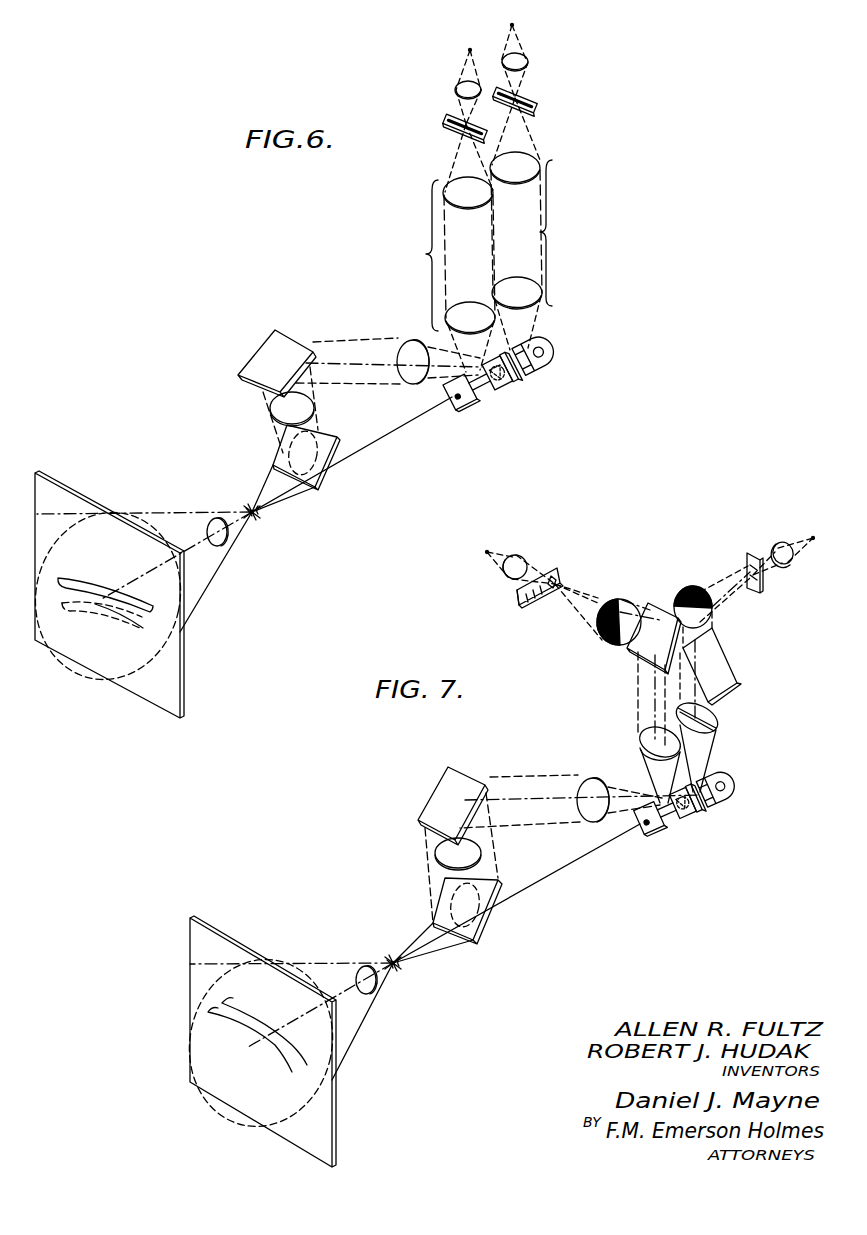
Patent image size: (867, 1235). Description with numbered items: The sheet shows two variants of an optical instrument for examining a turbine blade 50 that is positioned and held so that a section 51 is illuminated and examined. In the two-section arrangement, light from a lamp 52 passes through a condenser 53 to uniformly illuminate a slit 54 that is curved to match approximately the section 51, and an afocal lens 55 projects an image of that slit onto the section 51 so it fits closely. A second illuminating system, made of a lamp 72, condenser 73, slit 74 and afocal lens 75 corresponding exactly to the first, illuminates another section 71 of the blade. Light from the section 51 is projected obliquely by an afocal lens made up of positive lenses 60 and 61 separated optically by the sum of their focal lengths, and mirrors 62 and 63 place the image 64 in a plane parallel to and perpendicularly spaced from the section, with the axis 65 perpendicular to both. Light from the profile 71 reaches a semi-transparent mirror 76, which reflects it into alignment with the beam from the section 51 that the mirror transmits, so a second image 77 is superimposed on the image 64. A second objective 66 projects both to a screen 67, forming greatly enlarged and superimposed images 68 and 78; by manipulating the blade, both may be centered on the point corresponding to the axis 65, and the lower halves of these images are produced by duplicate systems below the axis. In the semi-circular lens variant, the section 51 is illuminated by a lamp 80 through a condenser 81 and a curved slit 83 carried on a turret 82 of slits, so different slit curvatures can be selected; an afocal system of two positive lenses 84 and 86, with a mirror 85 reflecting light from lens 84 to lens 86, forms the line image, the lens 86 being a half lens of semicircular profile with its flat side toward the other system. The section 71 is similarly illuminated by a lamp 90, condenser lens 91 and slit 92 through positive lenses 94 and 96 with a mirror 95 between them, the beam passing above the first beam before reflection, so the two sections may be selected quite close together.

In FIG. 6, the turbine blade 50 is at (492, 384).
In FIG. 7, the turbine blade 50 is at (680, 815).
In FIG. 6, the section 51 is at (535, 372).
In FIG. 7, the section 51 is at (712, 805).
In FIG. 6, the lamp 52 is at (518, 26).
In FIG. 6, the condenser 53 is at (528, 66).
In FIG. 6, the slit 54 is at (537, 108).
In FIG. 6, the afocal lens 55 is at (536, 251).
In FIG. 6, the positive lens 60 is at (411, 340).
In FIG. 7, the positive lens 60 is at (591, 778).
In FIG. 6, the positive lens 61 is at (272, 415).
In FIG. 7, the positive lens 61 is at (438, 858).
In FIG. 6, the mirror 62 is at (270, 333).
In FIG. 7, the mirror 62 is at (446, 780).
In FIG. 6, the mirror 63 is at (318, 492).
In FIG. 7, the mirror 63 is at (475, 943).
In FIG. 6, the image 64 is at (252, 508).
In FIG. 7, the image 64 is at (393, 958).
In FIG. 6, the axis 65 is at (375, 440).
In FIG. 7, the axis 65 is at (572, 862).
In FIG. 6, the second objective 66 is at (210, 525).
In FIG. 7, the second objective 66 is at (360, 972).
In FIG. 6, the screen 67 is at (60, 498).
In FIG. 7, the screen 67 is at (205, 935).
In FIG. 6, the enlarged image 68 is at (77, 577).
In FIG. 7, the enlarged image 68 is at (225, 998).
In FIG. 6, the section 71 is at (470, 407).
In FIG. 7, the section 71 is at (660, 836).
In FIG. 6, the lamp 72 is at (467, 50).
In FIG. 6, the condenser 73 is at (455, 92).
In FIG. 6, the slit 74 is at (452, 138).
In FIG. 6, the afocal lens 75 is at (449, 274).
In FIG. 6, the semi-transparent mirror 76 is at (506, 378).
In FIG. 7, the semi-transparent mirror 76 is at (685, 805).
In FIG. 6, the second image 77 is at (250, 506).
In FIG. 7, the second image 77 is at (396, 966).
In FIG. 6, the enlarged image 78 is at (80, 608).
In FIG. 7, the enlarged image 78 is at (208, 1012).
In FIG. 7, the lamp 80 is at (483, 551).
In FIG. 7, the condenser 81 is at (505, 575).
In FIG. 7, the turret 82 is at (556, 572).
In FIG. 7, the curved slit 83 is at (520, 602).
In FIG. 7, the positive lens 84 is at (627, 600).
In FIG. 7, the mirror 85 is at (727, 682).
In FIG. 7, the half lens 86 is at (717, 727).
In FIG. 7, the lamp 90 is at (811, 535).
In FIG. 7, the condenser lens 91 is at (778, 545).
In FIG. 7, the slit 92 is at (745, 565).
In FIG. 7, the positive lens 94 is at (702, 622).
In FIG. 7, the mirror 95 is at (632, 652).
In FIG. 7, the half lens 96 is at (642, 734).